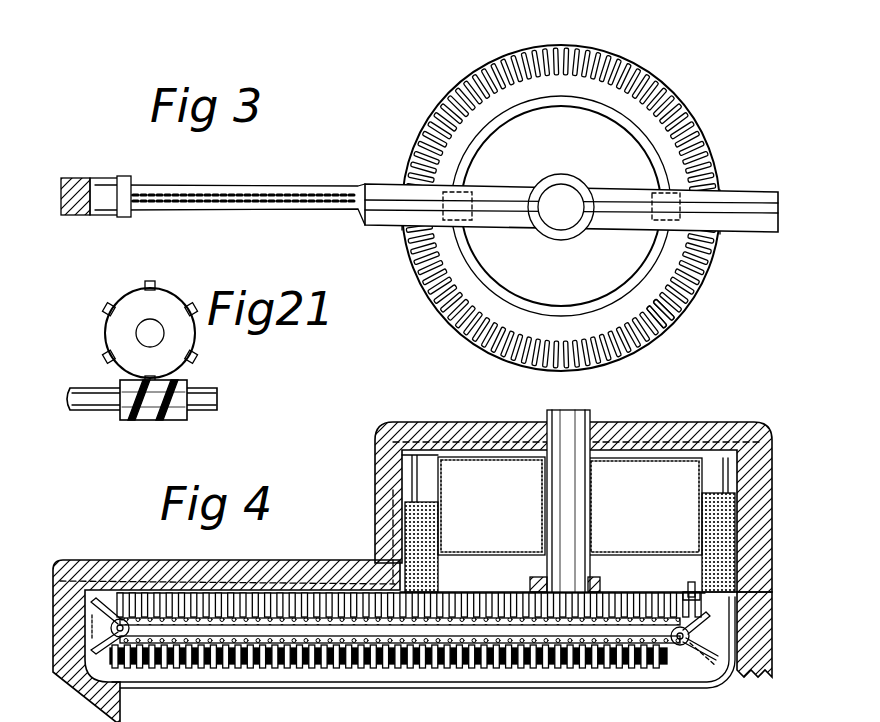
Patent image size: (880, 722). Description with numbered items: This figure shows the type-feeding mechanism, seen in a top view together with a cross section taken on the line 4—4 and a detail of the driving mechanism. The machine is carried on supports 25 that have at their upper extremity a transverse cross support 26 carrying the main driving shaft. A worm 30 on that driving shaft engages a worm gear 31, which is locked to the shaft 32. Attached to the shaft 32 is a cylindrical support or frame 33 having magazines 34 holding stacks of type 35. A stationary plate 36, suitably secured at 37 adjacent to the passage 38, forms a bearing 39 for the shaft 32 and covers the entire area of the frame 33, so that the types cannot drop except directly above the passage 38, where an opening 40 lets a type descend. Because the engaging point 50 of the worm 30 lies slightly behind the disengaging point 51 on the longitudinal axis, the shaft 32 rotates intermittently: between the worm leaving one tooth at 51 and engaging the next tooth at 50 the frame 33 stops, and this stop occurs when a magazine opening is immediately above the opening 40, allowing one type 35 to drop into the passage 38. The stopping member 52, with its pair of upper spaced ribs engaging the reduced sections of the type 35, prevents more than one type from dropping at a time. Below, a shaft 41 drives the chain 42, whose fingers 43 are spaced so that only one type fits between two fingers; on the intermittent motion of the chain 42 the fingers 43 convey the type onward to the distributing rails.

In FIG. 3, the section line 4— 4 is at (408, 210).
In FIG. 4, the supports 25 is at (118, 720).
In FIG. 4, the transverse cross support 26 is at (693, 425).
In FIG. 21, the worm 30 is at (130, 422).
In FIG. 21, the worm gear 31 is at (197, 340).
In FIG. 3, the shaft 32 is at (562, 223).
In FIG. 4, the shaft 32 is at (592, 412).
In FIG. 3, the cylindrical support or frame 33 is at (663, 143).
In FIG. 4, the cylindrical support or frame 33 is at (442, 477).
In FIG. 3, the magazines 34 is at (490, 70).
In FIG. 4, the magazines 34 is at (425, 470).
In FIG. 3, the type 35 is at (663, 307).
In FIG. 4, the type 35 is at (440, 510).
In FIG. 3, the stationary plate 36 is at (462, 92).
In FIG. 4, the stationary plate 36 is at (460, 590).
In FIG. 4, the securing point 37 is at (392, 582).
In FIG. 4, the passage 38 is at (730, 627).
In FIG. 4, the bearing 39 is at (603, 578).
In FIG. 4, the opening 40 is at (693, 610).
In FIG. 4, the shaft 41 is at (143, 620).
In FIG. 4, the chain 42 is at (243, 617).
In FIG. 4, the fingers 43 is at (350, 597).
In FIG. 21, the engaging point 50 is at (125, 388).
In FIG. 21, the disengaging point 51 is at (190, 412).
In FIG. 4, the stopping member 52 is at (687, 600).